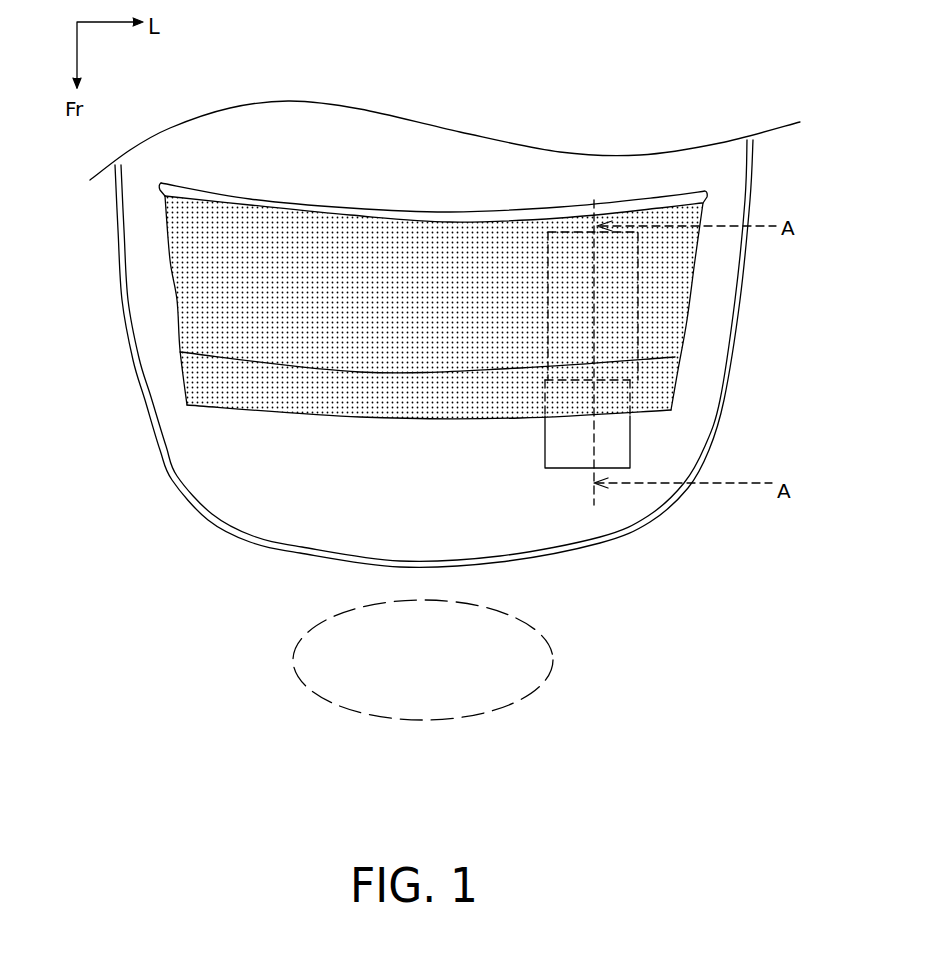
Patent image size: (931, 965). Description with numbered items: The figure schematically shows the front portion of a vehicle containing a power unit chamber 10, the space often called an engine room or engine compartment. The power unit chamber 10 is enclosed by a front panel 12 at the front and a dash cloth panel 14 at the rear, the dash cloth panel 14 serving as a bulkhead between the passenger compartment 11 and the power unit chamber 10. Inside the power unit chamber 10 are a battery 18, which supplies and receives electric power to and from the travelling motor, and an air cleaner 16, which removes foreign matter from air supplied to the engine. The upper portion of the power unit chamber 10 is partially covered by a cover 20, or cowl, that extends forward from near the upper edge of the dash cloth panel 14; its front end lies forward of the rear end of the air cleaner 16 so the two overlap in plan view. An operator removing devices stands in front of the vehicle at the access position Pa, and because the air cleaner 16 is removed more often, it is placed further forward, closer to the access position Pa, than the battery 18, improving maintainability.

The power unit chamber 10 is at (411, 481).
The passenger compartment 11 is at (381, 181).
The front panel 12 is at (172, 478).
The dash cloth panel 14 is at (516, 207).
The air cleaner 16 is at (630, 445).
The battery 18 is at (640, 297).
The cover 20 is at (188, 380).
The access position Pa is at (485, 713).